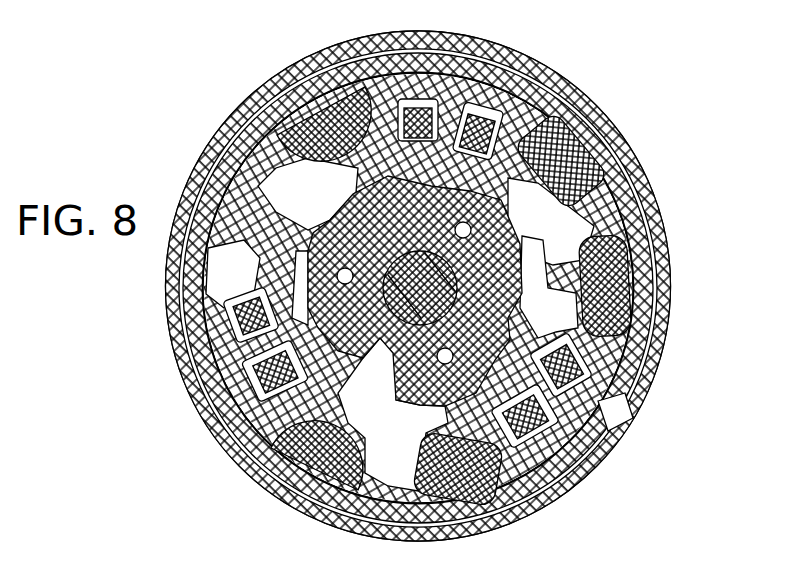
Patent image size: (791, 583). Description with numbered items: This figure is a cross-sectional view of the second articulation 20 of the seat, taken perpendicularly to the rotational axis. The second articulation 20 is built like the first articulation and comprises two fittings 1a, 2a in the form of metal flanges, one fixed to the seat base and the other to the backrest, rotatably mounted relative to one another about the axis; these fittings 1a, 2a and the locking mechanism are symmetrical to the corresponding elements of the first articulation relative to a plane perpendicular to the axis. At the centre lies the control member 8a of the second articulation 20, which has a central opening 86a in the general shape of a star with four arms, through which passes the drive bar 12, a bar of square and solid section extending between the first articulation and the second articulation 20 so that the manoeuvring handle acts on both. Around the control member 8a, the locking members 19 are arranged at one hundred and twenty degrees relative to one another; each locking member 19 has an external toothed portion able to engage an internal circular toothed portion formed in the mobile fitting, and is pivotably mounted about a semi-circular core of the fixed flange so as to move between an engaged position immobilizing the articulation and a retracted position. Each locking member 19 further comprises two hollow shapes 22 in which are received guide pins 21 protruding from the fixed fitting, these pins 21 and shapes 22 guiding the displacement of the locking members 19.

The second articulation 20 is at (238, 71).
The fitting 1a is at (573, 470).
The fitting 2a is at (597, 410).
The control member 8a is at (597, 123).
The drive bar 12 is at (417, 280).
The locking member 19 is at (595, 347).
The guide pin 21 is at (237, 382).
The hollow shape 22 is at (240, 353).
The central opening 86a is at (380, 297).